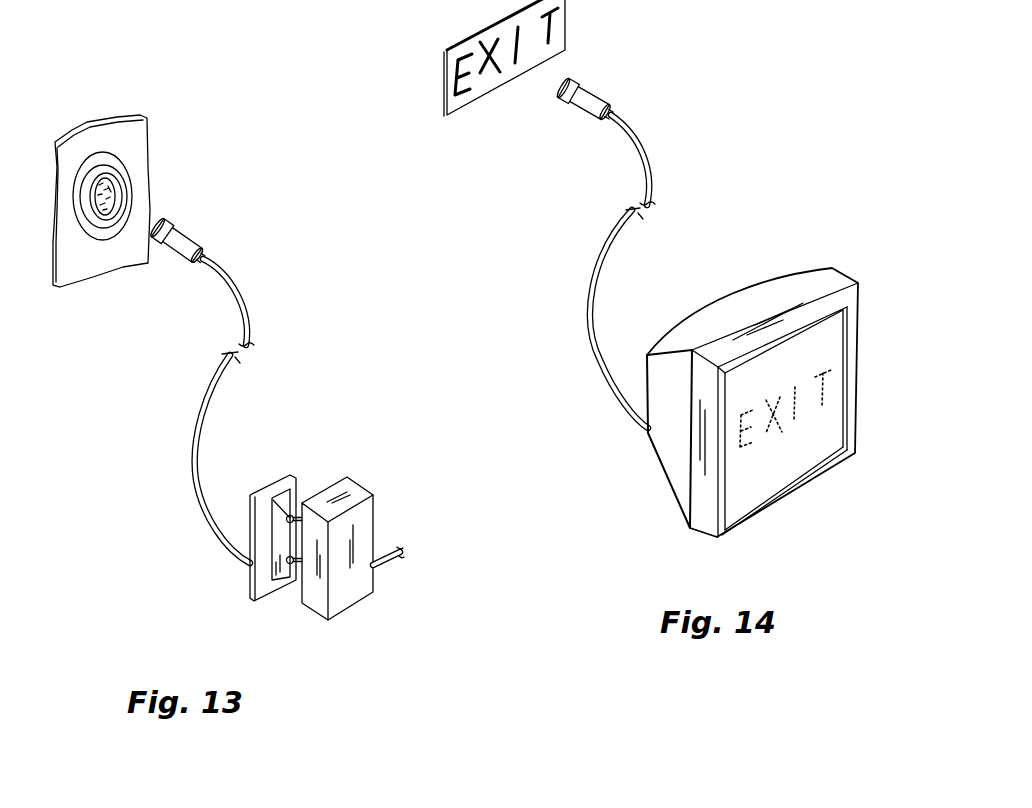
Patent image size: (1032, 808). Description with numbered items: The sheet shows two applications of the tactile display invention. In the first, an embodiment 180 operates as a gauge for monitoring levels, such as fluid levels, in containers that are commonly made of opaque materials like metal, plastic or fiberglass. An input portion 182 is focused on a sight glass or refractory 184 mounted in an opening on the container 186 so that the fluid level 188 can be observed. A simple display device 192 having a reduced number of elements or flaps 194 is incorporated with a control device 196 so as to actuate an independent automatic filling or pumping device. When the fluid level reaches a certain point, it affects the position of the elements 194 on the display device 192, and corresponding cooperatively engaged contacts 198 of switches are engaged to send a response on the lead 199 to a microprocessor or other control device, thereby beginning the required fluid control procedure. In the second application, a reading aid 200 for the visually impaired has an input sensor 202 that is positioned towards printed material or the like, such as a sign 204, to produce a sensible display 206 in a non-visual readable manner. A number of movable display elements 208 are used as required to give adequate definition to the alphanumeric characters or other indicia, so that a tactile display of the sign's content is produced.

In FIG. 13, the embodiment 180 is at (250, 411).
In FIG. 13, the input portion 182 is at (185, 248).
In FIG. 13, the sight glass or refractory 184 is at (123, 175).
In FIG. 13, the container 186 is at (123, 142).
In FIG. 13, the fluid level 188 is at (112, 208).
In FIG. 13, the display device 192 is at (282, 578).
In FIG. 13, the elements or flaps 194 is at (290, 515).
In FIG. 13, the control device 196 is at (365, 512).
In FIG. 13, the contacts 198 is at (290, 564).
In FIG. 13, the lead 199 is at (395, 560).
In FIG. 14, the reading aid 200 is at (684, 272).
In FIG. 14, the input sensor 202 is at (568, 108).
In FIG. 14, the sign 204 is at (563, 32).
In FIG. 14, the sensible display 206 is at (823, 390).
In FIG. 14, the movable display elements 208 is at (753, 438).